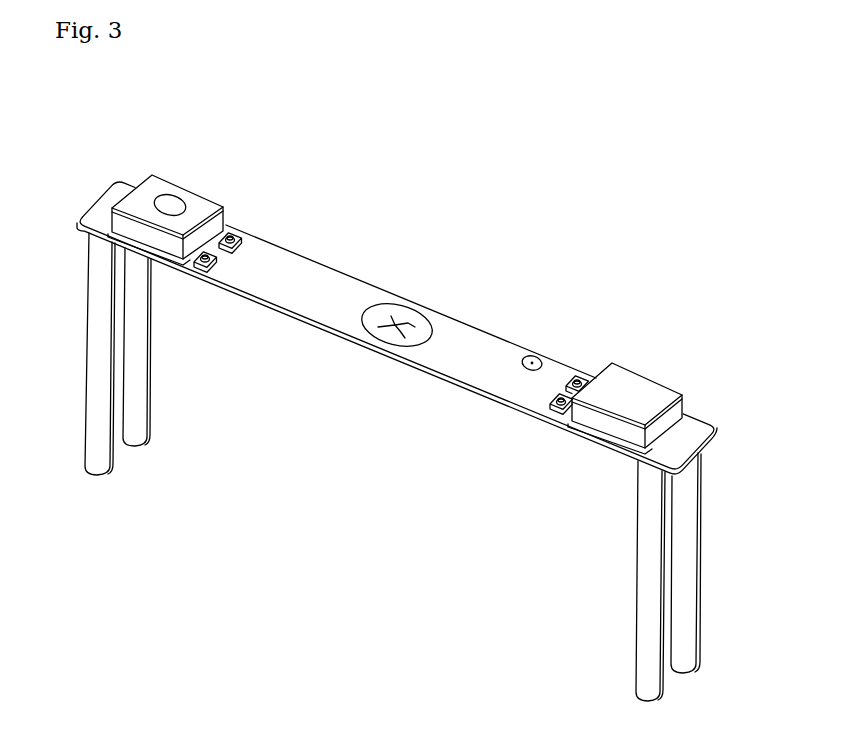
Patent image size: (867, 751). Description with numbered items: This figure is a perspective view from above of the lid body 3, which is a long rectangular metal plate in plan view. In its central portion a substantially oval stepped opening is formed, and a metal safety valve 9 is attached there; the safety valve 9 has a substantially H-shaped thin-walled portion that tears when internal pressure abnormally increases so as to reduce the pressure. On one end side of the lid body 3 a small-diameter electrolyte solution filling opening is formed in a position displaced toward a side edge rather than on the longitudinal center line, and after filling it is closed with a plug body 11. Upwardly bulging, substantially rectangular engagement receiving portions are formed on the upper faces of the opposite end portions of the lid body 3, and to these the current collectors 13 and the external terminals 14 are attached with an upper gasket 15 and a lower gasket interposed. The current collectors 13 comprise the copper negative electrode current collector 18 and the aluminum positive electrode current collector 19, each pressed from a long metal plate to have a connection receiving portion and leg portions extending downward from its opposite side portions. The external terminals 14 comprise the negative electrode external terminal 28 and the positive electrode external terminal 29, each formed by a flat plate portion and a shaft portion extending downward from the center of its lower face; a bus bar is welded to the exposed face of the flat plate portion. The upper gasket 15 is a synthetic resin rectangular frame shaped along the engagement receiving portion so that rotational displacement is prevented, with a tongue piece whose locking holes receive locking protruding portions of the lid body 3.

The lid body 3 is at (311, 272).
The safety valve 9 is at (400, 320).
The plug body 11 is at (534, 356).
The current collector 13 is at (393, 467).
The external terminal 14 is at (422, 293).
The upper gasket 15 is at (217, 223).
The negative electrode current collector 18 is at (148, 376).
The positive electrode current collector 19 is at (637, 606).
The negative electrode external terminal 28 is at (197, 203).
The positive electrode external terminal 29 is at (637, 386).